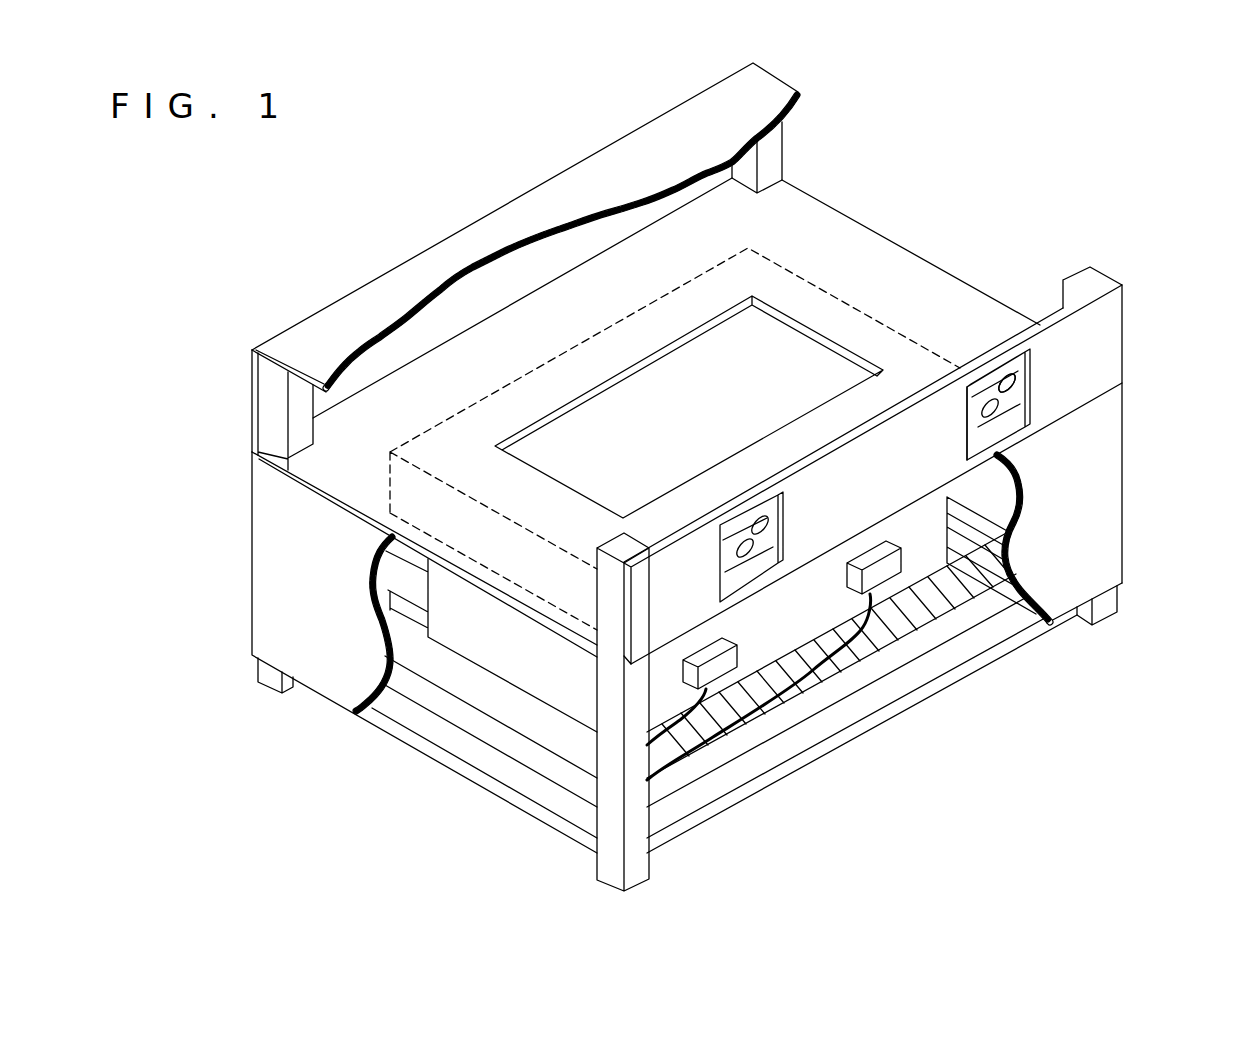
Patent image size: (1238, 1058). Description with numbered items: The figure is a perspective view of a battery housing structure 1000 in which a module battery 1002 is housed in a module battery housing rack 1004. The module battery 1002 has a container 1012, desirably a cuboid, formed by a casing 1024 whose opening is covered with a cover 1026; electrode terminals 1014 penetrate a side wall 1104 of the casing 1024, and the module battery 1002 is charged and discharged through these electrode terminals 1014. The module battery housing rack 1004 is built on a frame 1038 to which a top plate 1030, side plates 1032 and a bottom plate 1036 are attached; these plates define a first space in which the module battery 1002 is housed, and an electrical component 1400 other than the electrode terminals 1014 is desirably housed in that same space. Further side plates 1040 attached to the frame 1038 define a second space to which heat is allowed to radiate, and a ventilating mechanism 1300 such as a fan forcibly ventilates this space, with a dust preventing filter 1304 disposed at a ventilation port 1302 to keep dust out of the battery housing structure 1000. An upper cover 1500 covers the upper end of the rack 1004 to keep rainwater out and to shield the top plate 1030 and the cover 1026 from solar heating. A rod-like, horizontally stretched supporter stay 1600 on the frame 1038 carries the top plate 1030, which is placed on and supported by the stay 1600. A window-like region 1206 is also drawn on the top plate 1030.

The battery housing structure 1000 is at (622, 110).
The module battery 1002 is at (517, 688).
The module battery housing rack 1004 is at (597, 867).
The container 1012 is at (528, 441).
The electrode terminals 1014 is at (847, 584).
The casing 1024 is at (427, 635).
The cover 1026 is at (385, 483).
The top plate 1030 is at (905, 250).
The side plates 1032 is at (250, 482).
The bottom plate 1036 is at (887, 723).
The frame 1038 is at (1125, 594).
The side plates 1040 is at (250, 398).
The side wall 1104 is at (918, 563).
The window 1206 is at (708, 402).
The ventilating mechanism 1300 is at (1015, 388).
The ventilation port 1302 is at (978, 435).
The dust preventing filter 1304 is at (978, 397).
The electrical component 1400 is at (750, 723).
The upper cover 1500 is at (500, 205).
The supporter stay 1600 is at (510, 613).